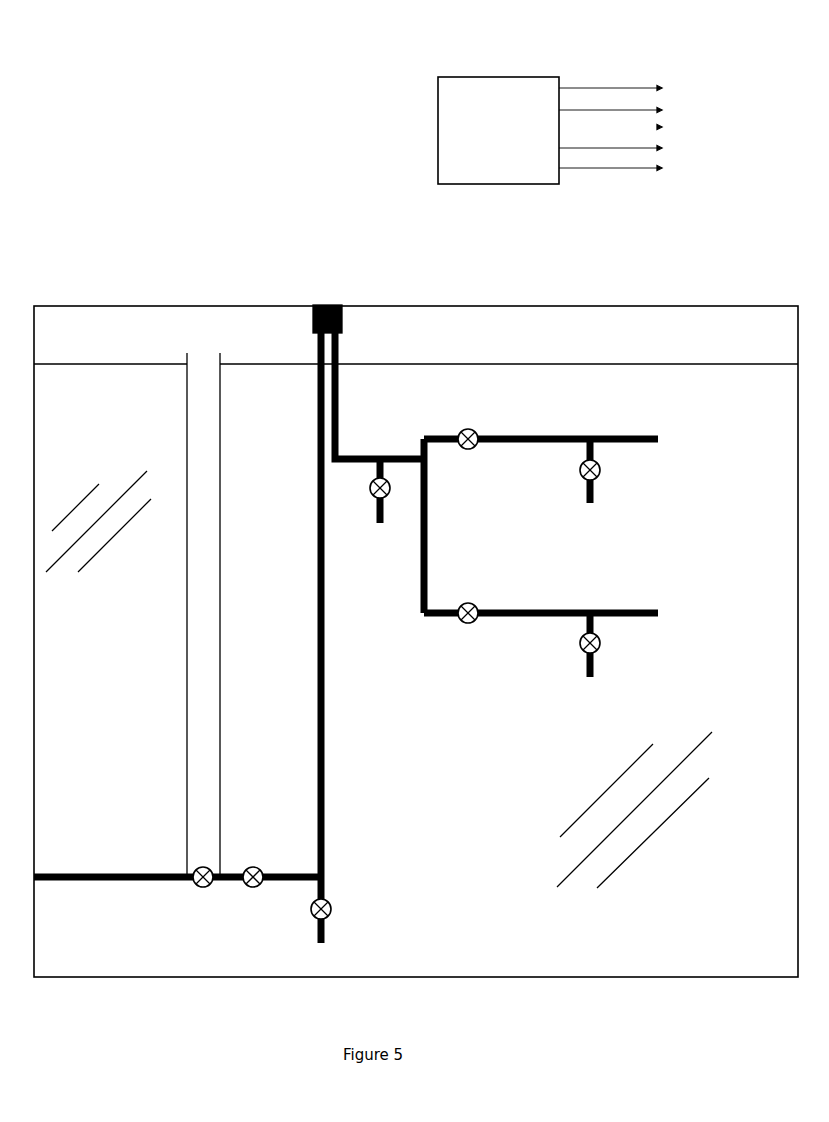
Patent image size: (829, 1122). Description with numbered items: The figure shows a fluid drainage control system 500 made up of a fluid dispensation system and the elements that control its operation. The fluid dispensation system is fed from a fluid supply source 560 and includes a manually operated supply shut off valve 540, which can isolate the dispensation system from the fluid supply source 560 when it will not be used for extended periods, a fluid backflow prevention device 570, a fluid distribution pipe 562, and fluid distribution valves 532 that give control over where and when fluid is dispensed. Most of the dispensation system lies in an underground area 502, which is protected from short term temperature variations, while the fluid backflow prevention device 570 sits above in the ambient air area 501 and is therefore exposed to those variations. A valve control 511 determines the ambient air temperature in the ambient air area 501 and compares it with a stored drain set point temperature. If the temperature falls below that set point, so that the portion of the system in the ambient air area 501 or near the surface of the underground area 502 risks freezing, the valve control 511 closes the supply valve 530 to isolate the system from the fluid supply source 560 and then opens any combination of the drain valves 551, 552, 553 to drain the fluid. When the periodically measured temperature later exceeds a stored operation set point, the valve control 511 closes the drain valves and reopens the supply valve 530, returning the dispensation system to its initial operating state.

The fluid drainage control system 500 is at (100, 34).
The valve control 511 is at (453, 76).
The ambient air area 501 is at (416, 348).
The underground area 502 is at (379, 620).
The fluid backflow prevention device 570 is at (332, 303).
The fluid supply source 560 is at (98, 875).
The fluid distribution pipe 562 is at (655, 435).
The drain valve 553 is at (601, 470).
The fluid distribution valves 532 is at (475, 448).
The drain valve 552 is at (372, 496).
The supply shut off valve 540 is at (202, 889).
The supply valve 530 is at (252, 865).
The drain valve 551 is at (332, 905).